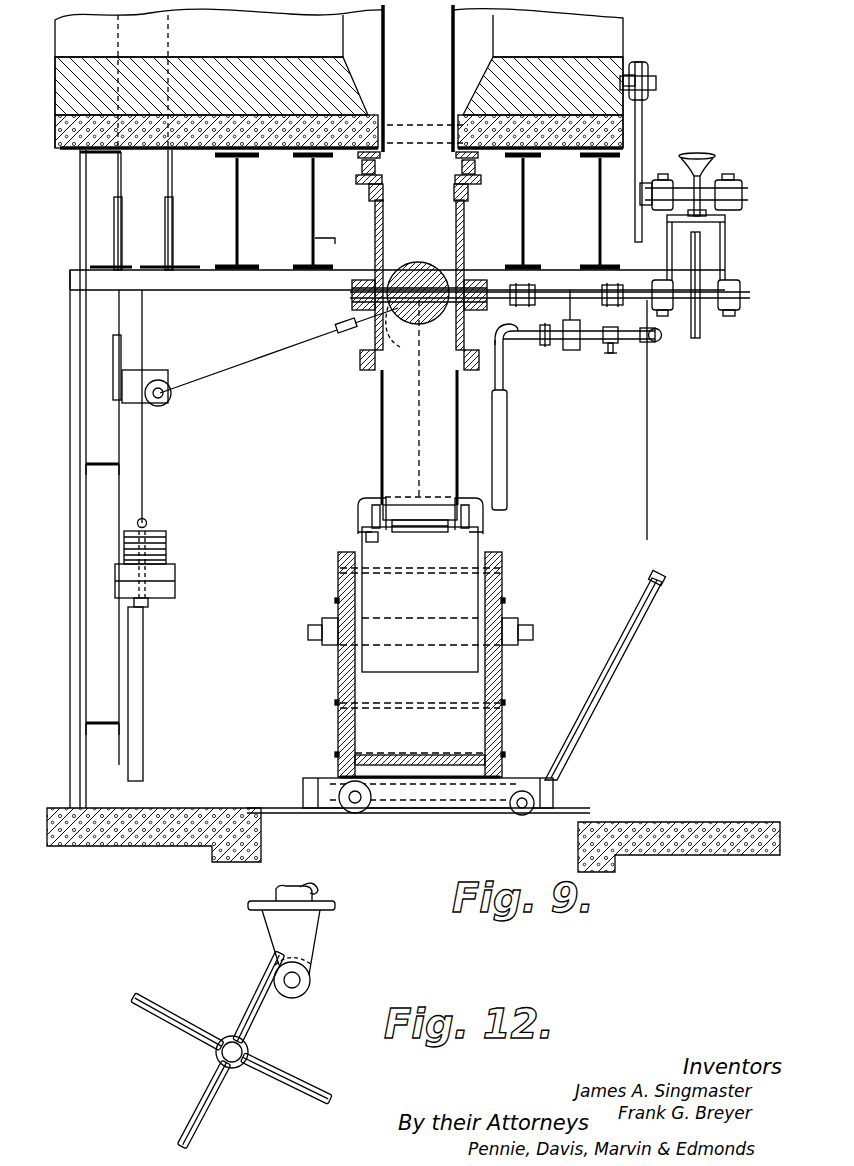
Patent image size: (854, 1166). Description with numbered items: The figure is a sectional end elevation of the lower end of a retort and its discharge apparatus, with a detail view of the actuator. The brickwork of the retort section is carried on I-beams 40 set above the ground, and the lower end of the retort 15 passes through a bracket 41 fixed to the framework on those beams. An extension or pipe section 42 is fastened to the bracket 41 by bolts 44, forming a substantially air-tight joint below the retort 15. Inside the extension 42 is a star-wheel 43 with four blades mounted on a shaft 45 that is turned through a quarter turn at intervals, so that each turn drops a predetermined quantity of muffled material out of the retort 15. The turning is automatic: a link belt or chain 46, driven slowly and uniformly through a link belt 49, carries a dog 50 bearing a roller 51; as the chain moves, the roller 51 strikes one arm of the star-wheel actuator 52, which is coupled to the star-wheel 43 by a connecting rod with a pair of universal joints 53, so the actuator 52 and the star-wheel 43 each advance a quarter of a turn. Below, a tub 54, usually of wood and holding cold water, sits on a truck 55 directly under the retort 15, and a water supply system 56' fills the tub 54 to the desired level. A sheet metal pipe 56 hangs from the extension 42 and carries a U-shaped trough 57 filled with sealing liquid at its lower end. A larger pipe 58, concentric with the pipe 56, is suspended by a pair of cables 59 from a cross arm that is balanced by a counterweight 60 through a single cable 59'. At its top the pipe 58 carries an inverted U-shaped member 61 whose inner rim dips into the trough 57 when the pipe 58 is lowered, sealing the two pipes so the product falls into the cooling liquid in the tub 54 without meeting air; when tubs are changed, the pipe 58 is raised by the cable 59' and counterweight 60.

In FIG. 9, the retort 15 is at (385, 38).
In FIG. 9, the I-beams 40 is at (312, 191).
In FIG. 9, the bracket 41 is at (362, 166).
In FIG. 9, the extension or pipe section 42 is at (464, 243).
In FIG. 9, the star-wheel 43 is at (419, 260).
In FIG. 9, the bolts 44 is at (470, 165).
In FIG. 9, the shaft 45 is at (488, 297).
In FIG. 9, the link belt or chain 46 is at (700, 153).
In FIG. 9, the link belt 49 is at (645, 125).
In FIG. 12, the dog 50 is at (300, 937).
In FIG. 12, the roller 51 is at (311, 985).
In FIG. 9, the star-wheel actuator 52 is at (701, 330).
In FIG. 12, the star-wheel actuator 52 is at (272, 1065).
In FIG. 9, the universal joints 53 is at (617, 302).
In FIG. 9, the tub 54 is at (504, 598).
In FIG. 9, the truck 55 is at (322, 778).
In FIG. 9, the sheet metal pipe 56 is at (390, 437).
In FIG. 9, the water supply system 56' is at (547, 340).
In FIG. 9, the U-shaped trough 57 is at (362, 513).
In FIG. 9, the pipe 58 is at (484, 543).
In FIG. 9, the cables 59 is at (387, 400).
In FIG. 9, the single cable 59' is at (266, 355).
In FIG. 9, the counterweight 60 is at (170, 575).
In FIG. 9, the inverted U-shaped member 61 is at (472, 498).